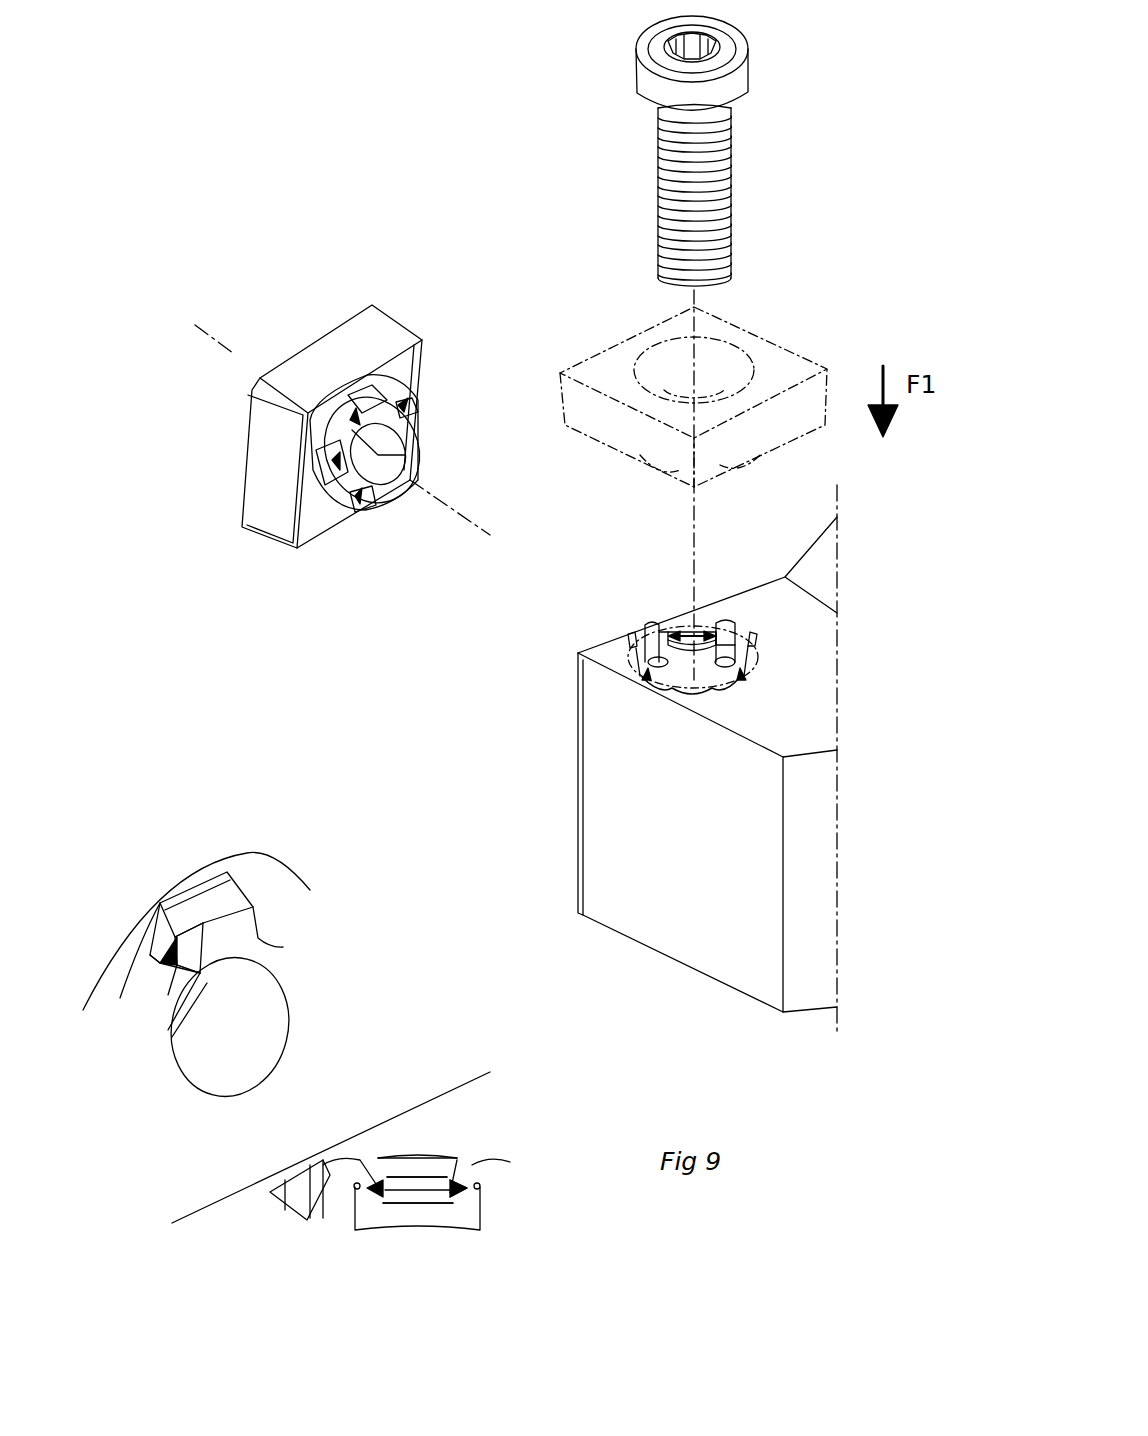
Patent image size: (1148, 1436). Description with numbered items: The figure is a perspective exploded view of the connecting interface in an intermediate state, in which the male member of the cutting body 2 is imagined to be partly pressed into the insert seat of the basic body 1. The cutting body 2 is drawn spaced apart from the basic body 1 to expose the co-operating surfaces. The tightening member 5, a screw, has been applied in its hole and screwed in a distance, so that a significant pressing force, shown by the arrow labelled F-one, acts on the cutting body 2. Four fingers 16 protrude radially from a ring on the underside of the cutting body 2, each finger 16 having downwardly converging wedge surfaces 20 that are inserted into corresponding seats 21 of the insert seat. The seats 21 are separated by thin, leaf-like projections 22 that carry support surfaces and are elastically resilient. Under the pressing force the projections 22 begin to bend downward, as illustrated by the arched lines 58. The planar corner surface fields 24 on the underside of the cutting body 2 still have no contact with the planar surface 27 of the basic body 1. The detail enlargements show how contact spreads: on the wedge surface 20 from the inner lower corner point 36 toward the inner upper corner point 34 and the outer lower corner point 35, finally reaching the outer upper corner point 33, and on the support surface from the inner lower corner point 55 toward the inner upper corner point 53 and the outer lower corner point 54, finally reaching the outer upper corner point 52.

The basic body 1 is at (578, 752).
The cutting body 2 is at (252, 550).
The tightening member 5 is at (748, 88).
The finger 16 is at (418, 443).
The wedge surface 20 is at (327, 433).
The seat 21 is at (643, 637).
The projection 22 is at (688, 628).
The corner surface field 24 is at (413, 368).
The surface of the basic body 27 is at (820, 648).
The outer corner point of the upper limiting line 33 is at (158, 925).
The inner corner point of the upper limiting line 34 is at (158, 958).
The outer corner point of the lower limiting line 35 is at (177, 937).
The inner corner point of the lower limiting line 36 is at (170, 973).
The outer corner point of the upper limiting line of the support surface 52 is at (465, 1158).
The inner corner point of the upper limiting line of the support surface 53 is at (440, 1170).
The outer corner point of the lower limiting line of the support surface 54 is at (478, 1190).
The inner corner point of the lower limiting line of the support surface 55 is at (462, 1173).
The arched line 58 is at (692, 688).